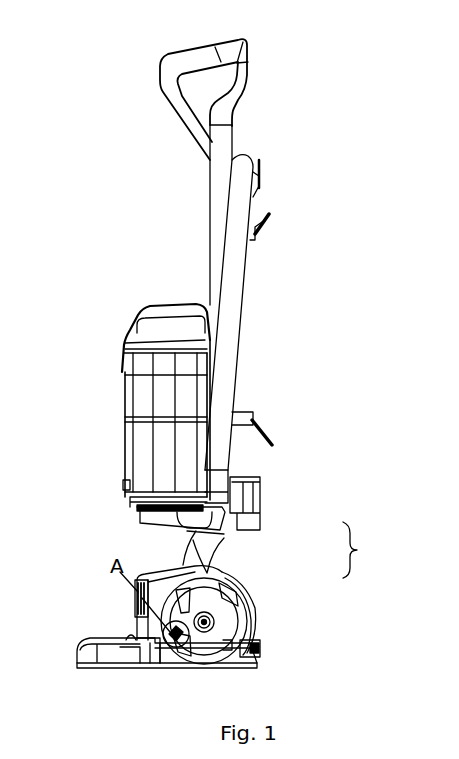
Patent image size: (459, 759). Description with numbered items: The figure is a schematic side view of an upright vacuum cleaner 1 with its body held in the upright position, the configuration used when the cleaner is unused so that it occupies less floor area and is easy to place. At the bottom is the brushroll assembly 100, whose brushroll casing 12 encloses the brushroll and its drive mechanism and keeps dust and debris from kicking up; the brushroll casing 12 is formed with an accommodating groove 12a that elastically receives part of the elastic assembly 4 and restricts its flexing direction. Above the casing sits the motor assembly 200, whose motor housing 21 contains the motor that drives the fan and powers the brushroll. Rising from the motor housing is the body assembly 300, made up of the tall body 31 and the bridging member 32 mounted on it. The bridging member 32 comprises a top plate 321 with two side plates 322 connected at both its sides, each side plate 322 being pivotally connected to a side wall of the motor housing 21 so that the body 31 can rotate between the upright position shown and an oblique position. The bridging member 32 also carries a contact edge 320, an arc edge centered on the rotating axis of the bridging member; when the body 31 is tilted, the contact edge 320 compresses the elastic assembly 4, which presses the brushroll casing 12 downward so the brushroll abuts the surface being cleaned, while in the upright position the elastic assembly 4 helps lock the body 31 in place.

The upright vacuum cleaner 1 is at (209, 27).
The brushroll assembly 100 is at (120, 637).
The brushroll casing 12 is at (138, 648).
The accommodating groove 12a is at (177, 648).
The elastic assembly 4 is at (188, 639).
The motor assembly 200 is at (157, 568).
The body assembly 300 is at (369, 550).
The body 31 is at (217, 420).
The bridging member 32 is at (305, 549).
The top plate 321 is at (227, 567).
The side plate 322 is at (213, 614).
The contact edge 320 is at (243, 653).
The motor housing 21 is at (243, 632).